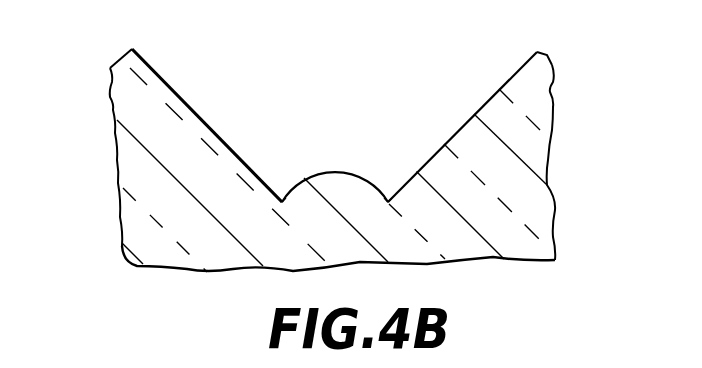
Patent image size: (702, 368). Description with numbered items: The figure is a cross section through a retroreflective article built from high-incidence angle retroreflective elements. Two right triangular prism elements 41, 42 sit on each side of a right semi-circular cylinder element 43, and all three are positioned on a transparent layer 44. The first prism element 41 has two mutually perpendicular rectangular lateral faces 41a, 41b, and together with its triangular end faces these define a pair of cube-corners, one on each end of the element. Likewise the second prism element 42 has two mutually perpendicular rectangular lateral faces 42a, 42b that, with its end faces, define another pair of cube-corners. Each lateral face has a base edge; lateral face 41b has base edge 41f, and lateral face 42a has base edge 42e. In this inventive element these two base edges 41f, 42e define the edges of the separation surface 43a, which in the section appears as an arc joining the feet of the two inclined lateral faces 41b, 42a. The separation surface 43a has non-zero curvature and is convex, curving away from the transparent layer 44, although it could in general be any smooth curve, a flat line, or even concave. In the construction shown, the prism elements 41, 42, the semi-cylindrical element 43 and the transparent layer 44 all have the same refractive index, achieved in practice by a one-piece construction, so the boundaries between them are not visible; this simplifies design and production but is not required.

The right triangular prism element 41 is at (122, 100).
The rectangular lateral face 41a is at (122, 63).
The rectangular lateral face 41b is at (177, 92).
The base edge 41f is at (282, 200).
The right triangular prism element 42 is at (558, 103).
The rectangular lateral face 42a is at (505, 82).
The rectangular lateral face 42b is at (548, 56).
The base edge 42e is at (388, 202).
The right semi-circular cylinder element 43 is at (340, 188).
The separation surface 43a is at (335, 168).
The transparent layer 44 is at (148, 261).